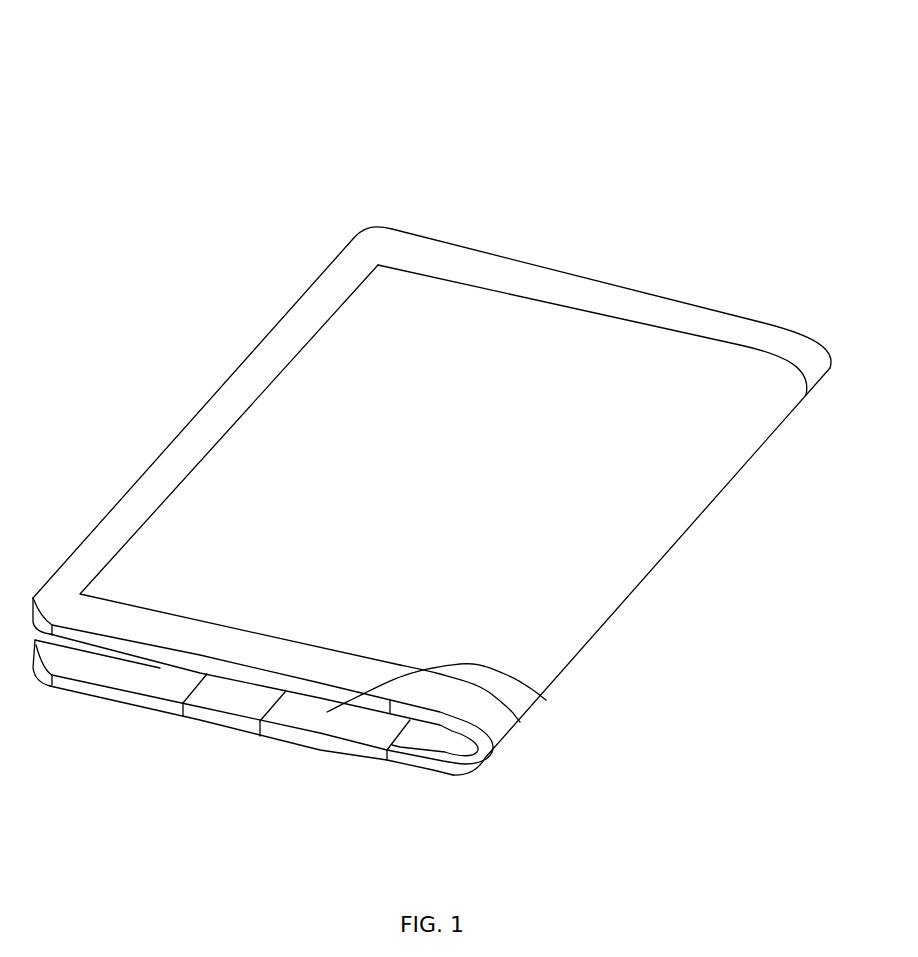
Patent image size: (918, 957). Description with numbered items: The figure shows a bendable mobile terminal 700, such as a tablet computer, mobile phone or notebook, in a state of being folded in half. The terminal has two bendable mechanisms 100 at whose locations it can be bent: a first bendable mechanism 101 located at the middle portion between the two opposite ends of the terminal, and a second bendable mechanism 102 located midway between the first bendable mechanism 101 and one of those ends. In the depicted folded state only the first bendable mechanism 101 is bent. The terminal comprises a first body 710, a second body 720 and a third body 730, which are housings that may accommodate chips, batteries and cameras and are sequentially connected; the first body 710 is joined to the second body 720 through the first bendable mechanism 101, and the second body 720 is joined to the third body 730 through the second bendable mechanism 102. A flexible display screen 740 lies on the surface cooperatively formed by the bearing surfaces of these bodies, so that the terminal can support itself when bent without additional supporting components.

The bendable mobile terminal 700 is at (432, 391).
The first body 710 is at (438, 493).
The second body 720 is at (546, 700).
The third body 730 is at (262, 711).
The display screen 740 is at (641, 571).
The bendable mechanisms 100 is at (233, 787).
The first bendable mechanism 101 is at (413, 775).
The second bendable mechanism 102 is at (234, 730).